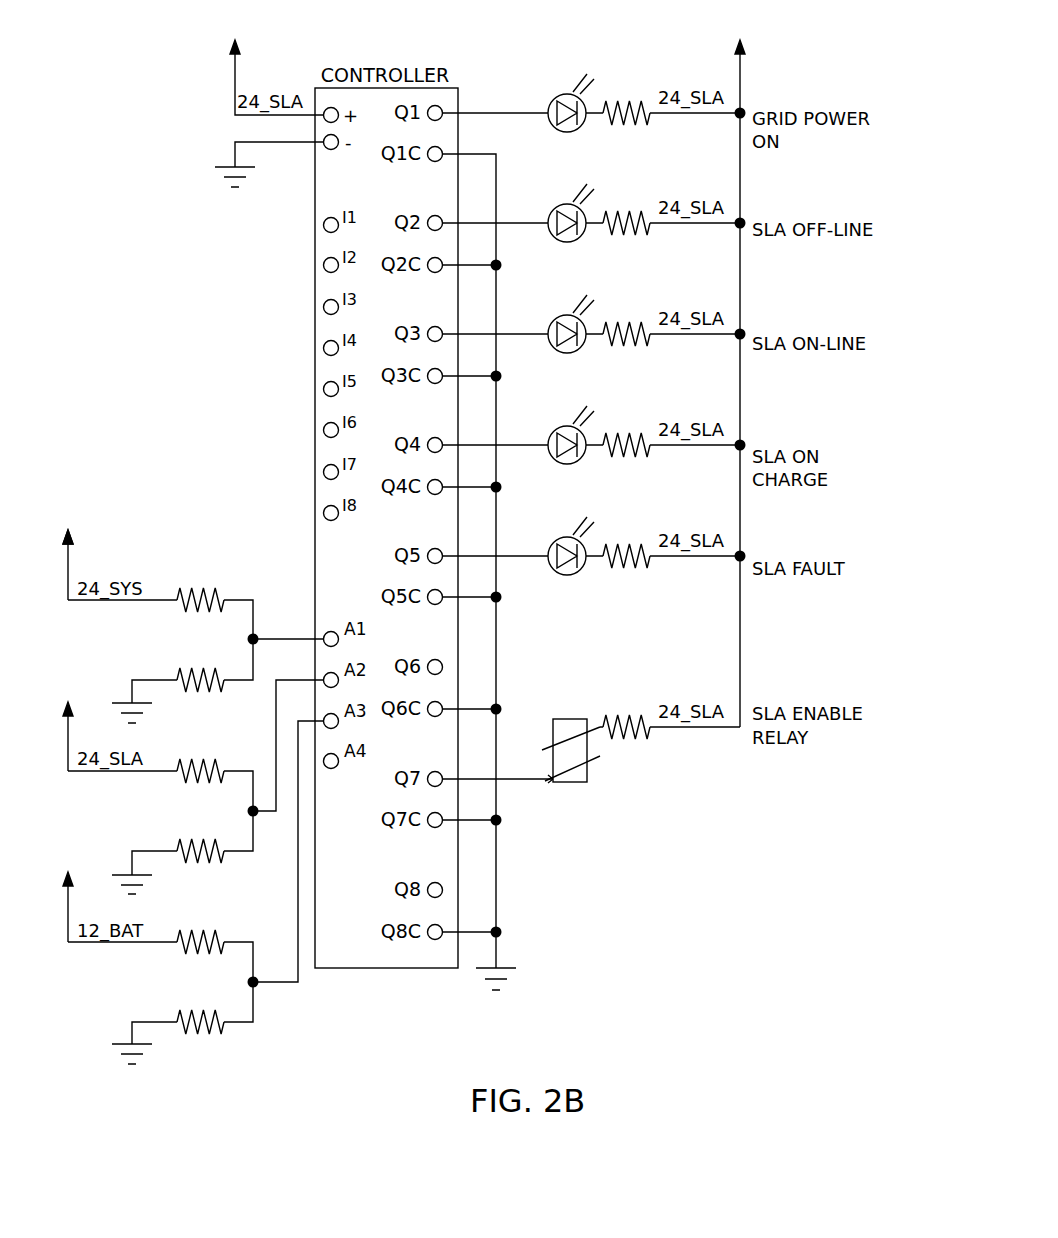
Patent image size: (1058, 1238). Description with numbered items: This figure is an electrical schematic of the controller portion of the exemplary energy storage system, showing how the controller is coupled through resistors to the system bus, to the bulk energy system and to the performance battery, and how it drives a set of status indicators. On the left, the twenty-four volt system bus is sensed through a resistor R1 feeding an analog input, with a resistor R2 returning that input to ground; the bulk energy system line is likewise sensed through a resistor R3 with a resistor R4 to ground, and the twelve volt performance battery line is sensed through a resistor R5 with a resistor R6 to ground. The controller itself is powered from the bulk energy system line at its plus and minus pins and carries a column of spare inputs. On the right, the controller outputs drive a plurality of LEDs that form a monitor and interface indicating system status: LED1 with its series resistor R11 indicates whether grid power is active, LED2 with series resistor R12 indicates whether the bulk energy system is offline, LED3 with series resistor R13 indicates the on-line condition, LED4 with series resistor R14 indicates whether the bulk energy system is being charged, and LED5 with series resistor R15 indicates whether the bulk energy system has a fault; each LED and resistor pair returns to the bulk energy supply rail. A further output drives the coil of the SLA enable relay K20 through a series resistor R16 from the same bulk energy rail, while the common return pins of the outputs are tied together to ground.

The resistor R1 is at (200, 579).
The resistor R2 is at (200, 659).
The resistor R3 is at (200, 749).
The resistor R4 is at (200, 829).
The resistor R5 is at (200, 920).
The resistor R6 is at (200, 1000).
The resistor R11 is at (626, 86).
The resistor R12 is at (626, 196).
The resistor R13 is at (626, 307).
The resistor R14 is at (626, 418).
The resistor R15 is at (626, 529).
The resistor R16 is at (626, 700).
The LED LED1 is at (555, 90).
The LED LED2 is at (555, 200).
The LED LED3 is at (555, 311).
The LED LED4 is at (555, 422).
The LED LED5 is at (555, 533).
The SLA enable relay K20 is at (553, 751).